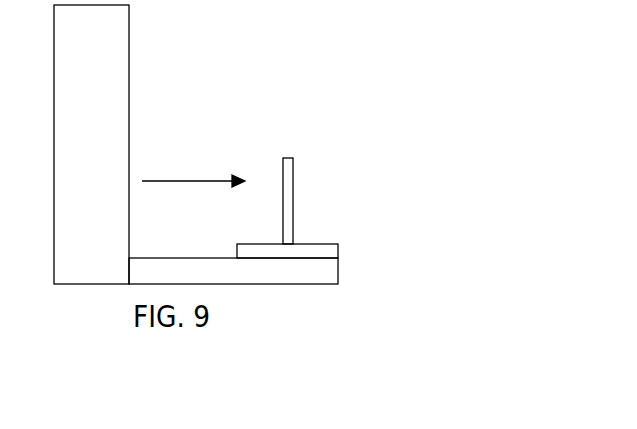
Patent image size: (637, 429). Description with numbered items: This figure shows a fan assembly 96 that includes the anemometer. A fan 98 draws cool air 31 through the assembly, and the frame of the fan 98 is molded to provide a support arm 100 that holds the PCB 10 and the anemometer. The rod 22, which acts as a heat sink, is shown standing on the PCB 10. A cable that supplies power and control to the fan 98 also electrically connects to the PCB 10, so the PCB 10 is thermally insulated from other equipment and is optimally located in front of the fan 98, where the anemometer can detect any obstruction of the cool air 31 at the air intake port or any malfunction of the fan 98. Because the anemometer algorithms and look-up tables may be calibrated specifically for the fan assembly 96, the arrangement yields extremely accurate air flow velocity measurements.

The fan 98 is at (129, 100).
The support arm 100 is at (338, 268).
The PCB 10 is at (317, 244).
The rod 22 is at (293, 190).
The cool air 31 is at (147, 181).
The fan assembly 96 is at (252, 70).